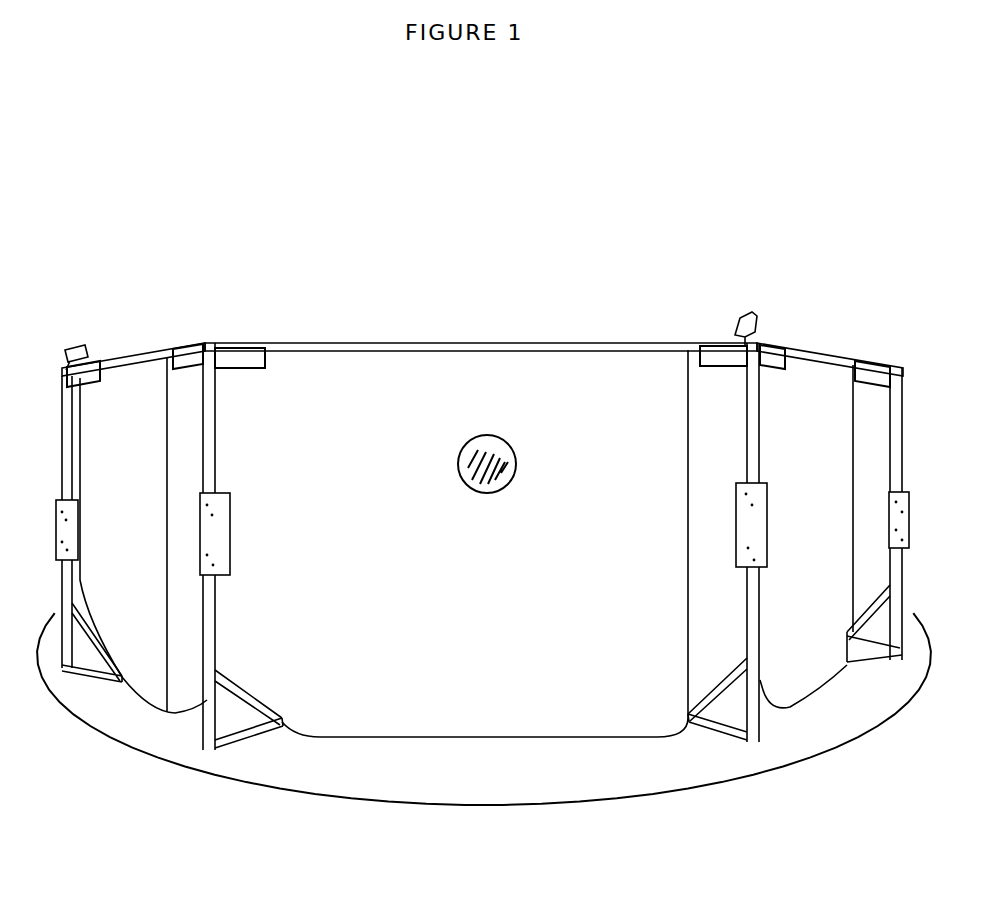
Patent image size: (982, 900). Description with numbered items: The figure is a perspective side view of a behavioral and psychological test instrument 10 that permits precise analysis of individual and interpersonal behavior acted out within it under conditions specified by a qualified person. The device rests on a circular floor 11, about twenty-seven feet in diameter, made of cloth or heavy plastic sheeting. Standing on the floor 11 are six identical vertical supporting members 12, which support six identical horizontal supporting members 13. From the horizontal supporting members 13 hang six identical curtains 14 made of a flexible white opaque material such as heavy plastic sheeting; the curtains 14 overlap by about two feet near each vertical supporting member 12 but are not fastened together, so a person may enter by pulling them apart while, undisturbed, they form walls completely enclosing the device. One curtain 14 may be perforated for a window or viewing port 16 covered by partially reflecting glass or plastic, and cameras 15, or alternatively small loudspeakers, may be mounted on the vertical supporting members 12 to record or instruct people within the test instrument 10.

The behavioral and psychological test instrument 10 is at (338, 801).
The circular floor 11 is at (484, 709).
The vertical supporting member 12 is at (193, 356).
The horizontal supporting member 13 is at (110, 367).
The curtain 14 is at (484, 543).
The camera 15 is at (66, 356).
The window or viewing port 16 is at (477, 452).